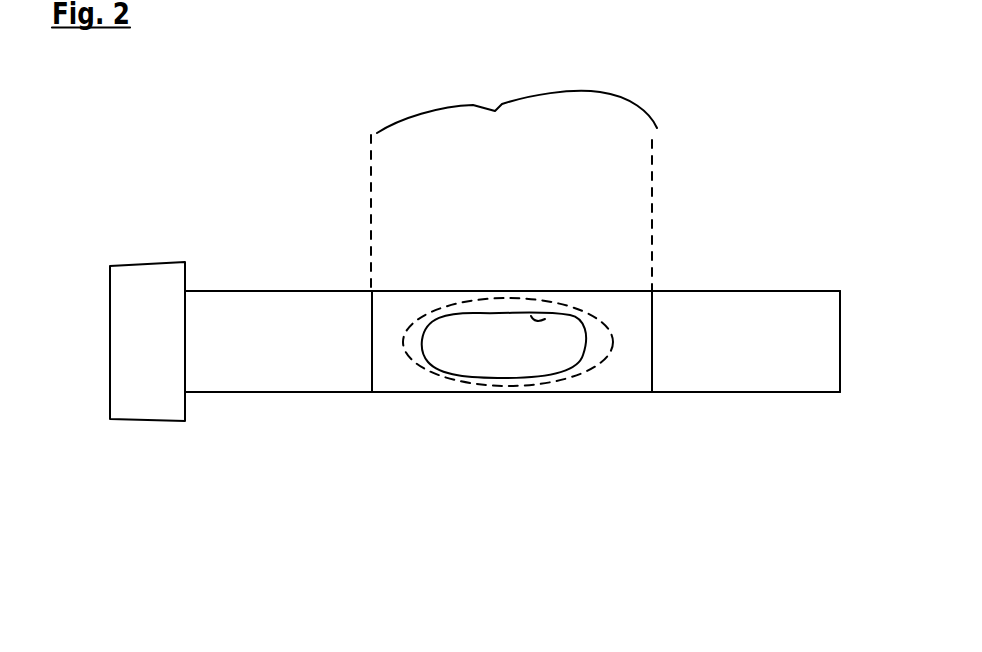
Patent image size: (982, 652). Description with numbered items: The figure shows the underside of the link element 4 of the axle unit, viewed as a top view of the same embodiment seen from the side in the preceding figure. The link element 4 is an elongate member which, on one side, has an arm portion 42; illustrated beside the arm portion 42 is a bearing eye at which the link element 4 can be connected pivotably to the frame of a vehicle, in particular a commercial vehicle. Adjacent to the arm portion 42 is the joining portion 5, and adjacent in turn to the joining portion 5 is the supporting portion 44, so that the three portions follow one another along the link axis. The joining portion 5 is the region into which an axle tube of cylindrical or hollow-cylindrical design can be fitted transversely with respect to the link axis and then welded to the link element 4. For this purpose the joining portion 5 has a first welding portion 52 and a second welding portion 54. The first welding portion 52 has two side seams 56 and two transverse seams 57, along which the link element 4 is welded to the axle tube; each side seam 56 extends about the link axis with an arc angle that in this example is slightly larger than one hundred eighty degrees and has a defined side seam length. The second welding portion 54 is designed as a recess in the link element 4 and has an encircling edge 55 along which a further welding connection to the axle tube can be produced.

The link element 4 is at (314, 441).
The arm portion 42 is at (270, 303).
The supporting portion 44 is at (808, 303).
The joining portion 5 is at (500, 102).
The first welding portion 52 is at (388, 457).
The second welding portion 54 is at (513, 308).
The encircling edge 55 is at (531, 316).
The side seam 56 is at (495, 203).
The transverse seam 57 is at (375, 218).